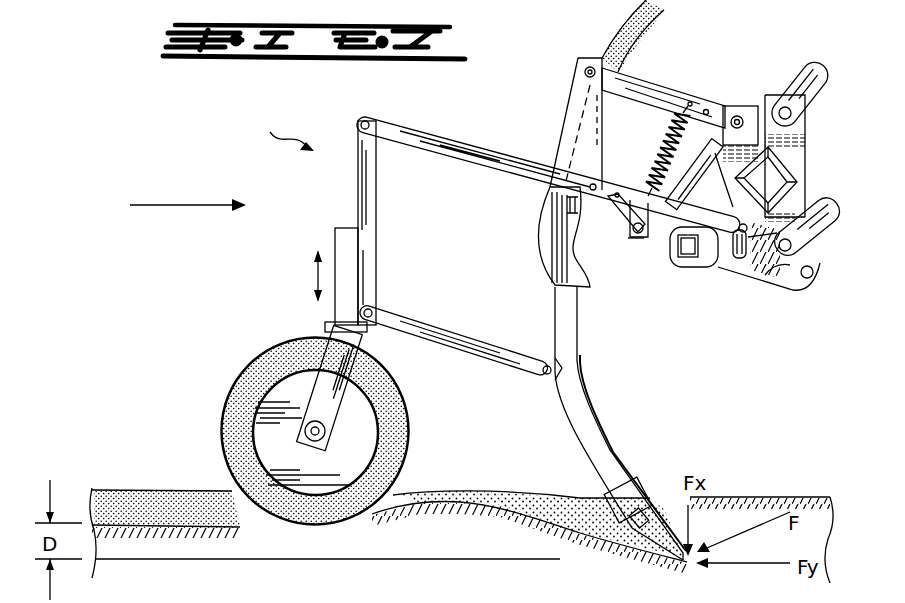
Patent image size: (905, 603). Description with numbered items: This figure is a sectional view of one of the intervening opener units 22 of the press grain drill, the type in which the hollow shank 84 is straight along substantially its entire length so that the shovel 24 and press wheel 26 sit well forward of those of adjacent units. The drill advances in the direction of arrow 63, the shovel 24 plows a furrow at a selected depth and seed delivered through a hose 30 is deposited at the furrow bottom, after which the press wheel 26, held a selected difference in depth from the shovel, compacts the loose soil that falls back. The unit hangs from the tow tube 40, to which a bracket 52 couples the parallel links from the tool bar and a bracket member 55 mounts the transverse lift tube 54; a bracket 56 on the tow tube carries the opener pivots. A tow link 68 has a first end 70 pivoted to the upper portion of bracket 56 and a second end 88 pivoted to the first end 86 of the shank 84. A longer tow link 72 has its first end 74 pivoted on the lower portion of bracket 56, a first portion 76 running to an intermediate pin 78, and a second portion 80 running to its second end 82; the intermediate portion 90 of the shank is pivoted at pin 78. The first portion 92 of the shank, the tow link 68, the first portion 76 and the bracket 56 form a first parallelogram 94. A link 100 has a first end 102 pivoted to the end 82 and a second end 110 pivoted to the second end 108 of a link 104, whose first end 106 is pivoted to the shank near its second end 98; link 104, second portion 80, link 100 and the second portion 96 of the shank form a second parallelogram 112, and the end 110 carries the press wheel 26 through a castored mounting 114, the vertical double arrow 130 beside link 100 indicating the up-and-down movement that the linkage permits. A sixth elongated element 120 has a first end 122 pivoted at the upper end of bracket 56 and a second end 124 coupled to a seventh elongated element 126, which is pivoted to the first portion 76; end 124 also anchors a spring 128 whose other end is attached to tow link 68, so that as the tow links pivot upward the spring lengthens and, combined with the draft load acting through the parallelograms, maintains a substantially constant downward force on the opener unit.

The opener unit 22 is at (282, 129).
The arrow 63 is at (184, 205).
The second end of tow link 82 is at (417, 136).
The second portion of tow link 80 is at (476, 162).
The intermediate pin 78 is at (553, 192).
The link 100 is at (376, 236).
The first end of link 102 is at (376, 172).
The second end of link 110 is at (374, 279).
The vertical adjustment 130 is at (316, 281).
The second end of link 108 is at (410, 332).
The link 104 is at (476, 351).
The first end of link 106 is at (521, 364).
The press wheel 26 is at (250, 370).
The castored mounting 114 is at (337, 397).
The first portion of shank 92 is at (566, 125).
The intermediate portion of shank 90 is at (562, 160).
The first end of shank 86 is at (586, 88).
The hose 30 is at (645, 27).
The second end of tow link 88 is at (634, 81).
The tow link 68 is at (664, 96).
The first end of tow link 70 is at (707, 110).
The bracket 56 is at (740, 104).
The bracket 52 is at (807, 123).
The tow tube 40 is at (783, 165).
The first parallelogram 94 is at (648, 160).
The spring 128 is at (676, 123).
The first end of elongated element 122 is at (659, 168).
The sixth elongated element 120 is at (733, 192).
The first portion of tow link 76 is at (631, 205).
The tow link 72 is at (653, 228).
The second end of elongated element 124 is at (634, 240).
The hollow shank 84 is at (552, 313).
The seventh elongated element 126 is at (553, 222).
The second portion of shank 96 is at (578, 406).
The second end of shank 98 is at (598, 463).
The shovel 24 is at (648, 482).
The second parallelogram 112 is at (486, 262).
The bracket member 55 is at (740, 286).
The lift tube 54 is at (688, 259).
The first end of tow link 74 is at (722, 258).